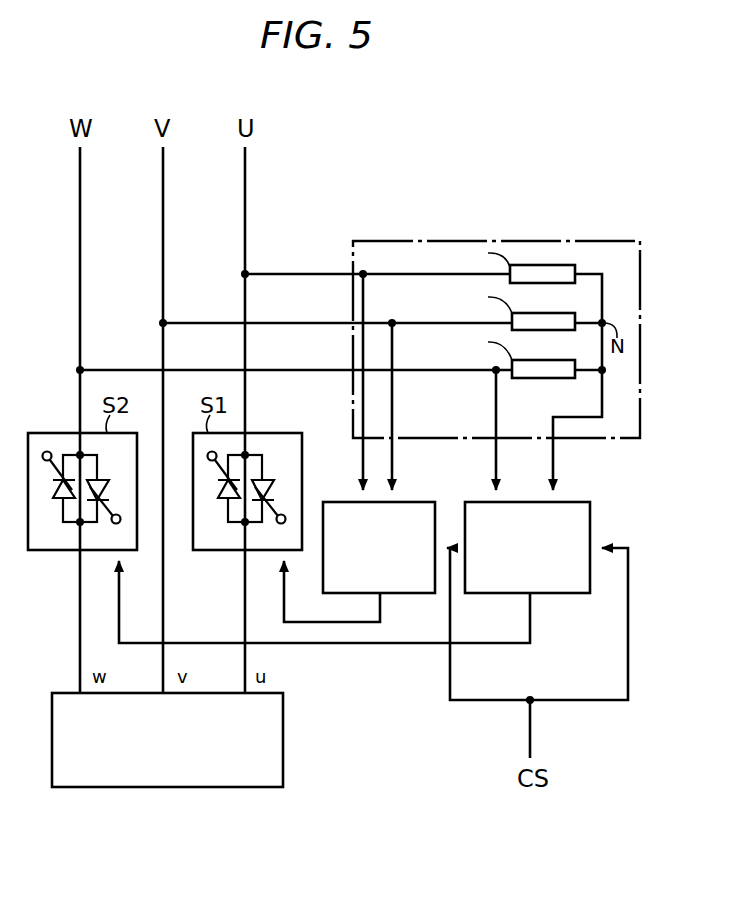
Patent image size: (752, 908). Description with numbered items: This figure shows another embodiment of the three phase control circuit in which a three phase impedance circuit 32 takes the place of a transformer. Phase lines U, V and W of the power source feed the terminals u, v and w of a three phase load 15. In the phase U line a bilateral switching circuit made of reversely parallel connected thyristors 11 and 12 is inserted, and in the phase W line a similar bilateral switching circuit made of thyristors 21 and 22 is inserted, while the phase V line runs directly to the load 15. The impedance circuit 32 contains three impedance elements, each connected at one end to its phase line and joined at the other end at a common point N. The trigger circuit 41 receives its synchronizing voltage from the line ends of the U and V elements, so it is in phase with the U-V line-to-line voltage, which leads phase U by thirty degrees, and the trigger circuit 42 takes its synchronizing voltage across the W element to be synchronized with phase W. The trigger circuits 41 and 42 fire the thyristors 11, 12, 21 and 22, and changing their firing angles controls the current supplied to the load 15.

The three phase impedance circuit 32 is at (414, 241).
The trigger circuit 41 is at (410, 502).
The trigger circuit 42 is at (577, 502).
The thyristor 21 is at (108, 488).
The thyristor 22 is at (62, 498).
The thyristor 11 is at (273, 487).
The thyristor 12 is at (227, 498).
The three phase load 15 is at (284, 762).